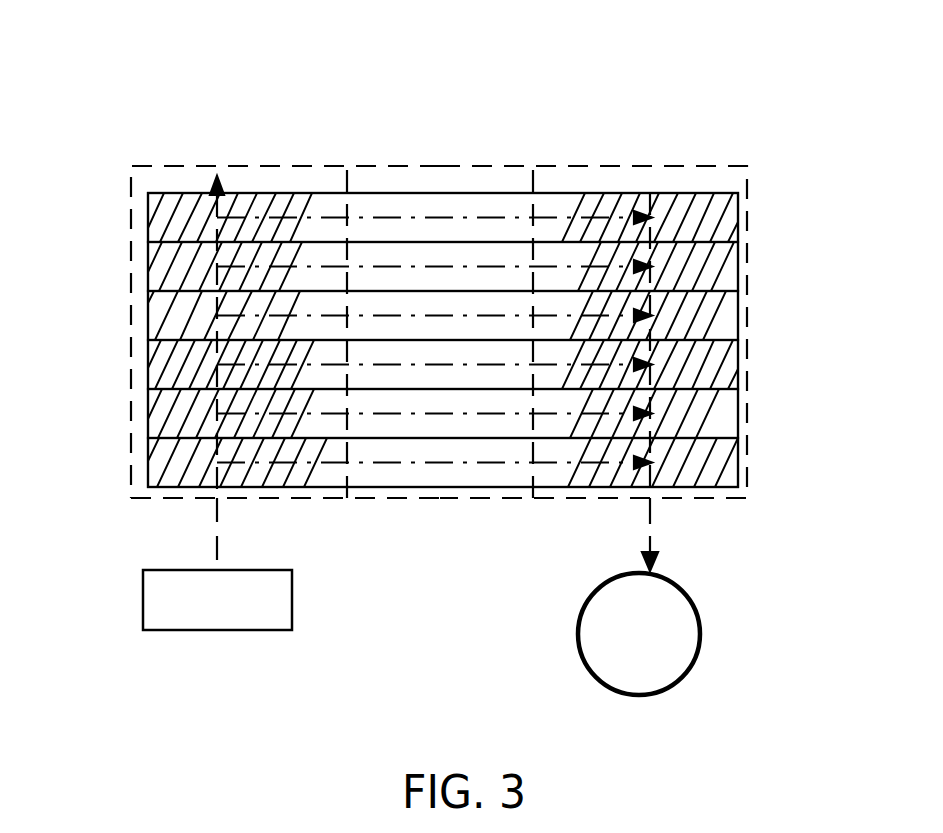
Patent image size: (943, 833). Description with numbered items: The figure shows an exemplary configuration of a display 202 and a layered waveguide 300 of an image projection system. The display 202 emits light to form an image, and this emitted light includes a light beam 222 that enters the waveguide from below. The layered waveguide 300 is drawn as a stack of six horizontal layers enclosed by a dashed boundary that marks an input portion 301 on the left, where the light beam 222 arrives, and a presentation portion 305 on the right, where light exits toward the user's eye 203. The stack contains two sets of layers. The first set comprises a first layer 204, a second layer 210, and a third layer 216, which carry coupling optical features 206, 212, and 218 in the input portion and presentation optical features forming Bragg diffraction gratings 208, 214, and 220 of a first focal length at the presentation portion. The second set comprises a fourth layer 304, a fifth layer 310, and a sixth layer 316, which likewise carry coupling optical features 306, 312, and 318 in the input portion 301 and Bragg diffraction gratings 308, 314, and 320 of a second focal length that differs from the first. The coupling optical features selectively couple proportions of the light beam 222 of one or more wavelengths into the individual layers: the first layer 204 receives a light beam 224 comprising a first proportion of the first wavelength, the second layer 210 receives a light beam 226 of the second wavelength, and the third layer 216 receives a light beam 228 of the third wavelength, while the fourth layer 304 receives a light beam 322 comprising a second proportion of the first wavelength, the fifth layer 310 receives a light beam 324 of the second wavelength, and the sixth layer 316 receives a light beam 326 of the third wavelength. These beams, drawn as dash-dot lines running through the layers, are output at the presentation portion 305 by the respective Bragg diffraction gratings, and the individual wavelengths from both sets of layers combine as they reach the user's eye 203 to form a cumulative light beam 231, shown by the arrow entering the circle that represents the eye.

The layered waveguide 300 is at (808, 58).
The input portion 301 is at (132, 193).
The presentation portion 305 is at (748, 168).
The sixth layer 316 is at (739, 210).
The fifth layer 310 is at (739, 266).
The fourth layer 304 is at (739, 314).
The third layer 216 is at (739, 365).
The second layer 210 is at (739, 418).
The first layer 204 is at (739, 464).
The coupling optical features 318 is at (205, 282).
The coupling optical features 312 is at (207, 280).
The coupling optical features 306 is at (250, 292).
The coupling optical features 218 is at (170, 366).
The coupling optical features 212 is at (172, 417).
The coupling optical features 206 is at (190, 490).
The light beam 326 is at (562, 218).
The Bragg diffraction gratings 320 is at (648, 222).
The Bragg diffraction gratings 314 is at (664, 228).
The Bragg diffraction gratings 308 is at (694, 228).
The Bragg diffraction gratings 220 is at (680, 385).
The Bragg diffraction gratings 214 is at (672, 382).
The Bragg diffraction gratings 208 is at (658, 490).
The light beam 322 is at (375, 310).
The light beam 324 is at (452, 266).
The light beam 228 is at (487, 366).
The light beam 226 is at (390, 415).
The light beam 224 is at (355, 465).
The light beam 222 is at (223, 550).
The display 202 is at (225, 630).
The cumulative light beam 231 is at (648, 532).
The user's eye 203 is at (703, 652).